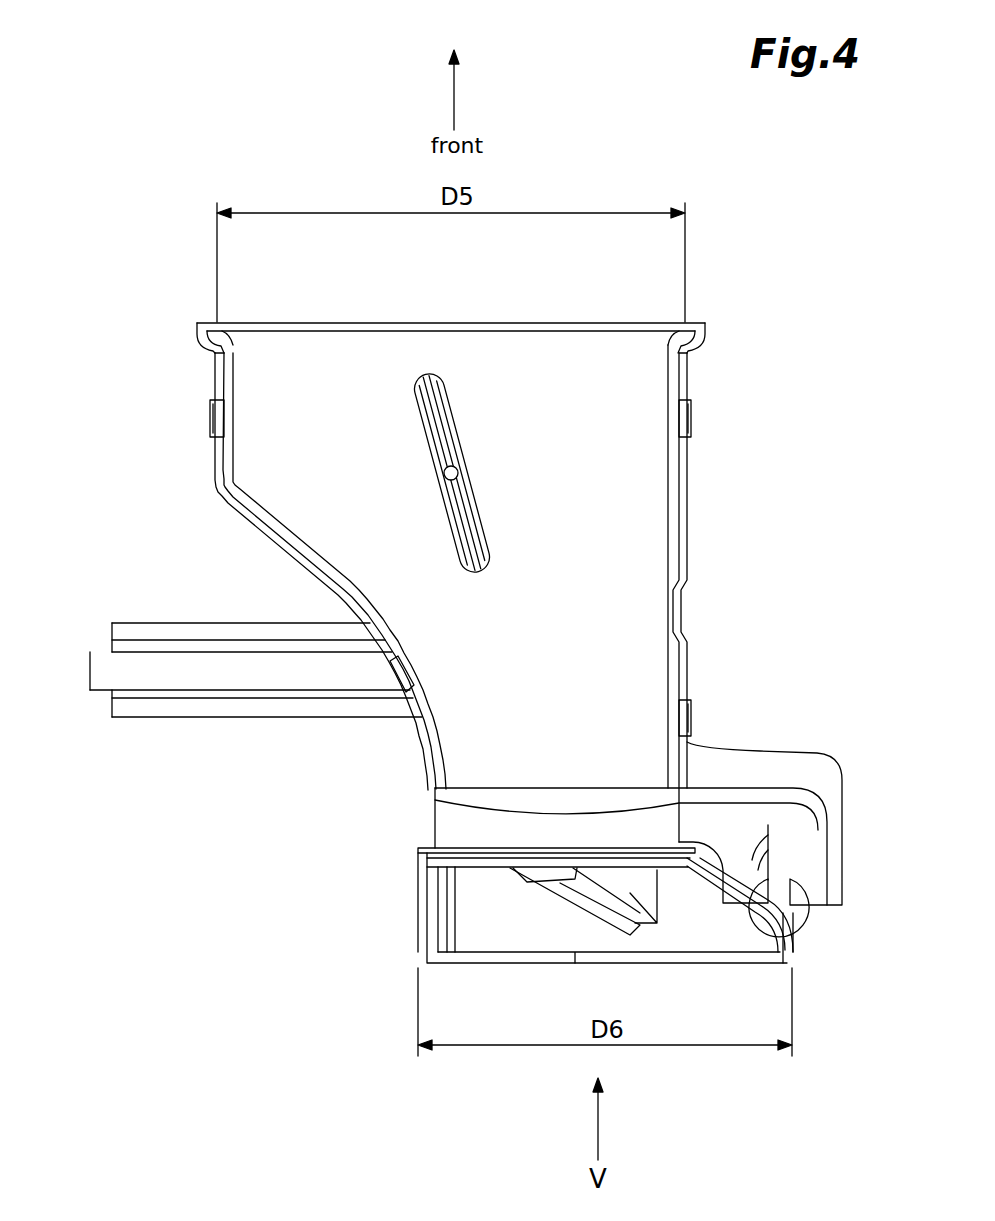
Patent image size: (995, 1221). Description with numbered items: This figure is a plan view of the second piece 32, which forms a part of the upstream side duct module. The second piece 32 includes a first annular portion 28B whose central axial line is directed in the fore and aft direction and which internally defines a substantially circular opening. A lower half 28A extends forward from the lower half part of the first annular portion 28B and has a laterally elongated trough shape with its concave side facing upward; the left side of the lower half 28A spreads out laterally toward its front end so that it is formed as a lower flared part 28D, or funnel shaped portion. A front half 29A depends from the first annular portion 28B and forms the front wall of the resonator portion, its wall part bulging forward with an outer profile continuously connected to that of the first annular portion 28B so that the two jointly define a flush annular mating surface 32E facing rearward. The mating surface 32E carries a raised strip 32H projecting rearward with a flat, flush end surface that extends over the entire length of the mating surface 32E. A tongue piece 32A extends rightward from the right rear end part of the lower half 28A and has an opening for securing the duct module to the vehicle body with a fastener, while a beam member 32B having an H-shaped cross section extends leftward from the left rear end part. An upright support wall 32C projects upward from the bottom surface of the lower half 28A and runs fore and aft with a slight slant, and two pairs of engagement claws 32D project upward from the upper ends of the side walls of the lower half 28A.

The second piece 32 is at (739, 321).
The lower half 28A is at (642, 527).
The first annular portion 28B is at (455, 826).
The lower flared part 28D is at (206, 338).
The tongue piece 32A is at (808, 827).
The beam member 32B is at (165, 712).
The upright support wall 32C is at (448, 402).
The engagement claws 32D is at (210, 420).
The annular mating surface 32E is at (420, 890).
The raised strip 32H is at (432, 945).
The front half 29A is at (712, 935).